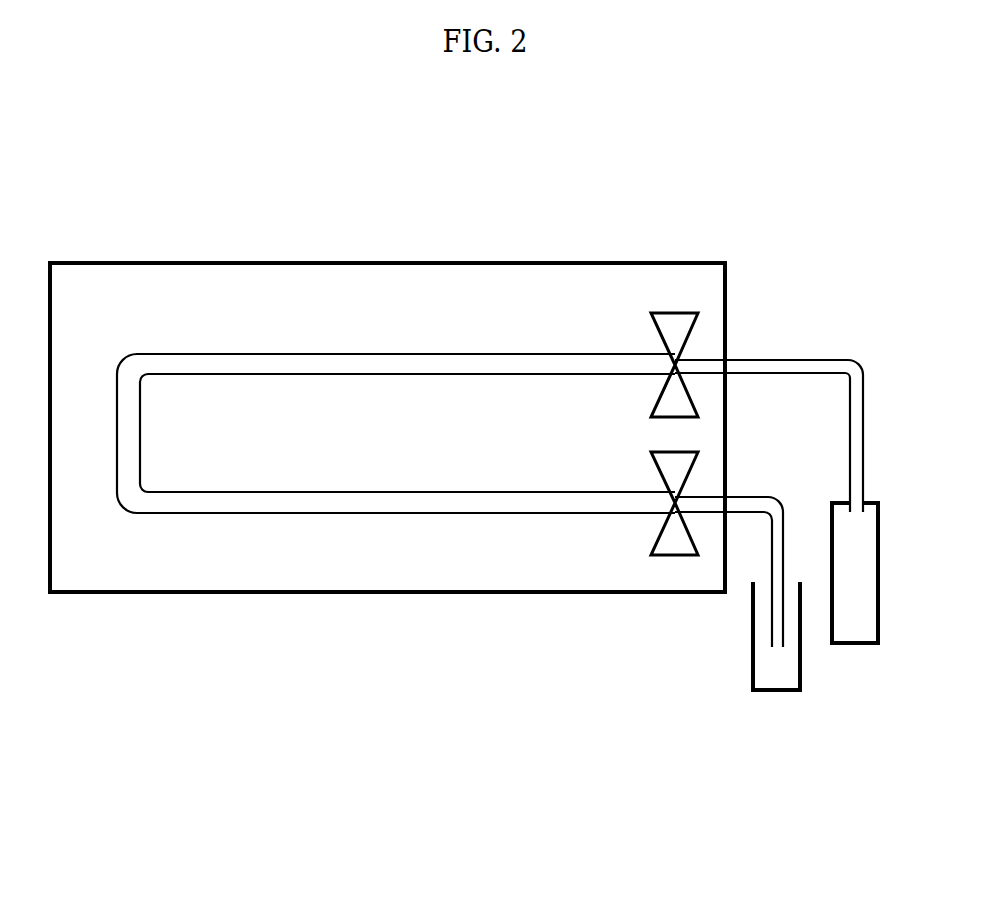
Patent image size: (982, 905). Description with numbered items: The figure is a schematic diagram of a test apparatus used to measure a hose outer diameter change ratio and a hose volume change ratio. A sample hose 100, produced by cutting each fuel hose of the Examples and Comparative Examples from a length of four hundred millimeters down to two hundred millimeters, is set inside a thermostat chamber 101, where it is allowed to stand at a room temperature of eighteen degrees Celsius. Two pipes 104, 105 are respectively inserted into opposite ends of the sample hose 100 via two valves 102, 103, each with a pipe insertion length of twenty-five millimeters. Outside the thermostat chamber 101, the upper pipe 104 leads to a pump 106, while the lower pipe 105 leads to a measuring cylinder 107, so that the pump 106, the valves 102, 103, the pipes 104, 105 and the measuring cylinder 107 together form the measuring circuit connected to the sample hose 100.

The sample hose 100 is at (240, 354).
The thermostat chamber 101 is at (107, 263).
The valve 102 is at (667, 313).
The valve 103 is at (670, 556).
The pipe 104 is at (790, 360).
The pipe 105 is at (772, 557).
The pump 106 is at (880, 566).
The measuring cylinder 107 is at (800, 680).